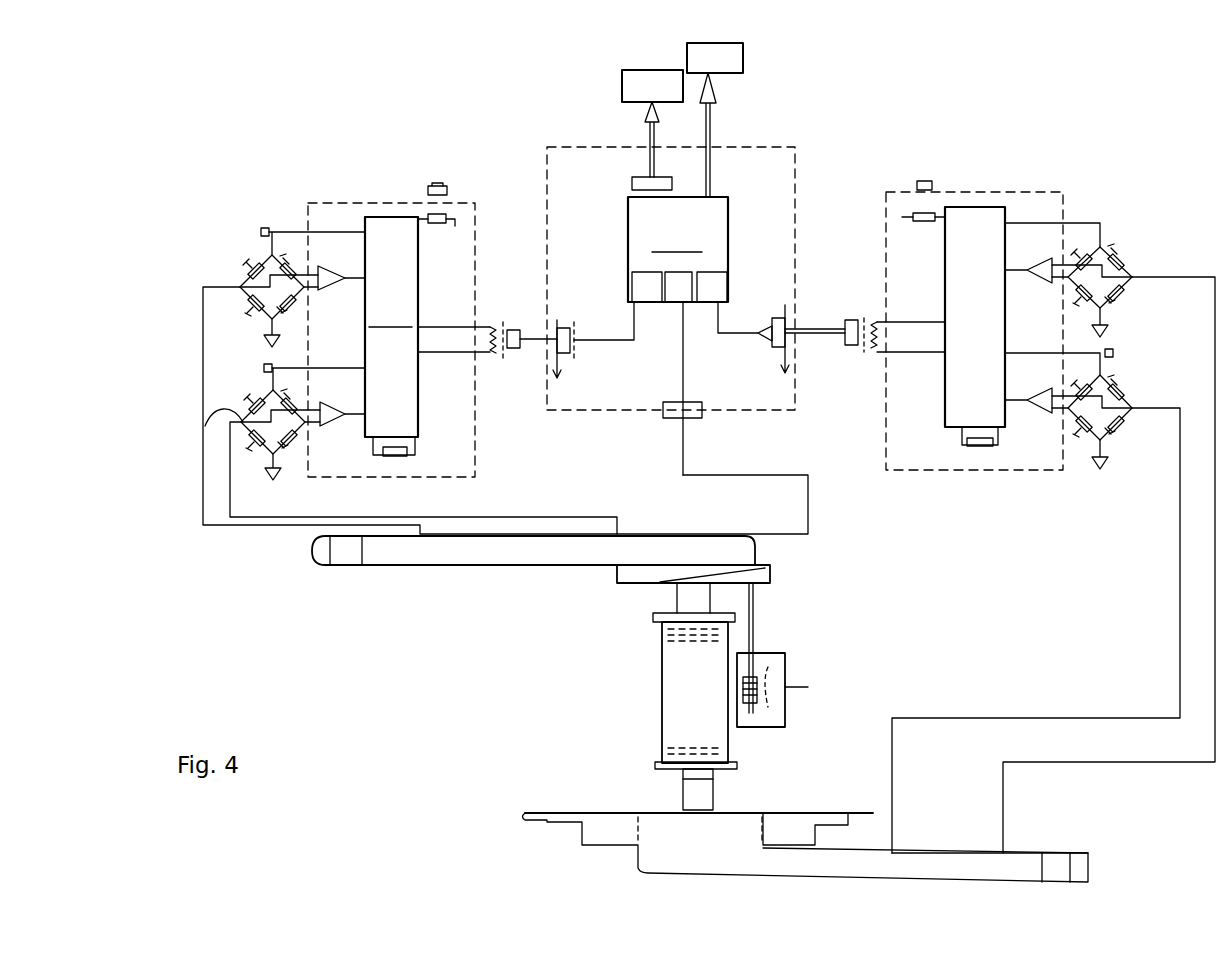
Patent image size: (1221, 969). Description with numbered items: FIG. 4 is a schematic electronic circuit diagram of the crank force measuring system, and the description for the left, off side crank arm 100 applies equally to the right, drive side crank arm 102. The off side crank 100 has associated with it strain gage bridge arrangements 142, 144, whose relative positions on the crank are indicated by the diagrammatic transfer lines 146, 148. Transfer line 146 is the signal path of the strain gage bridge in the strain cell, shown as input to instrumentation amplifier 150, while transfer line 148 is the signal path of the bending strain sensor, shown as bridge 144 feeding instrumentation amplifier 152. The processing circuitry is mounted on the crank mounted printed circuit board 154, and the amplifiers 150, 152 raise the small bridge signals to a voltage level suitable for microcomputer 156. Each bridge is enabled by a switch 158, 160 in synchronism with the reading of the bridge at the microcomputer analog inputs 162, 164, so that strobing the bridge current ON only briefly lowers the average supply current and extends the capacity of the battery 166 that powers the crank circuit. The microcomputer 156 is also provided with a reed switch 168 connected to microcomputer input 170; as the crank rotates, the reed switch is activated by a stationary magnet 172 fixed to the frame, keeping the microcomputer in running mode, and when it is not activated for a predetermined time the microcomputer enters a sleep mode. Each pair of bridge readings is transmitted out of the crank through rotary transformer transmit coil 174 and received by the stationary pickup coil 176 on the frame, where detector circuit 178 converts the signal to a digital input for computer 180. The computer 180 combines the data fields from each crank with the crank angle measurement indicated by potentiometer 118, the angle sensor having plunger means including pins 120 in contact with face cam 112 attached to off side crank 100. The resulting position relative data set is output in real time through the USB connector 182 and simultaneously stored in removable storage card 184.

The off side crank arm 100 is at (475, 553).
The drive side crank arm 102 is at (915, 865).
The face cam 112 is at (662, 571).
The potentiometer 118 is at (768, 668).
The pins 120 is at (752, 625).
The strain gage bridge arrangement 142 is at (238, 284).
The strain gage bridge 144 is at (203, 458).
The transfer line 146 is at (235, 527).
The transfer line 148 is at (277, 517).
The instrumentation amplifier 150 is at (327, 268).
The instrumentation amplifier 152 is at (338, 426).
The crank mounted printed circuit board 154 is at (478, 430).
The microcomputer 156 is at (391, 327).
The switch 158 is at (262, 232).
The switch 160 is at (264, 368).
The microcomputer analog input 162 is at (348, 276).
The microcomputer analog input 164 is at (350, 418).
The battery 166 is at (405, 458).
The reed switch 168 is at (452, 227).
The microcomputer input 170 is at (416, 215).
The stationary magnet 172 is at (434, 185).
The rotary transformer transmit coil 174 is at (488, 358).
The stationary pickup coil 176 is at (520, 348).
The detector circuit 178 is at (565, 355).
The computer 180 is at (693, 274).
The USB connector 182 is at (625, 82).
The removable storage card 184 is at (743, 60).